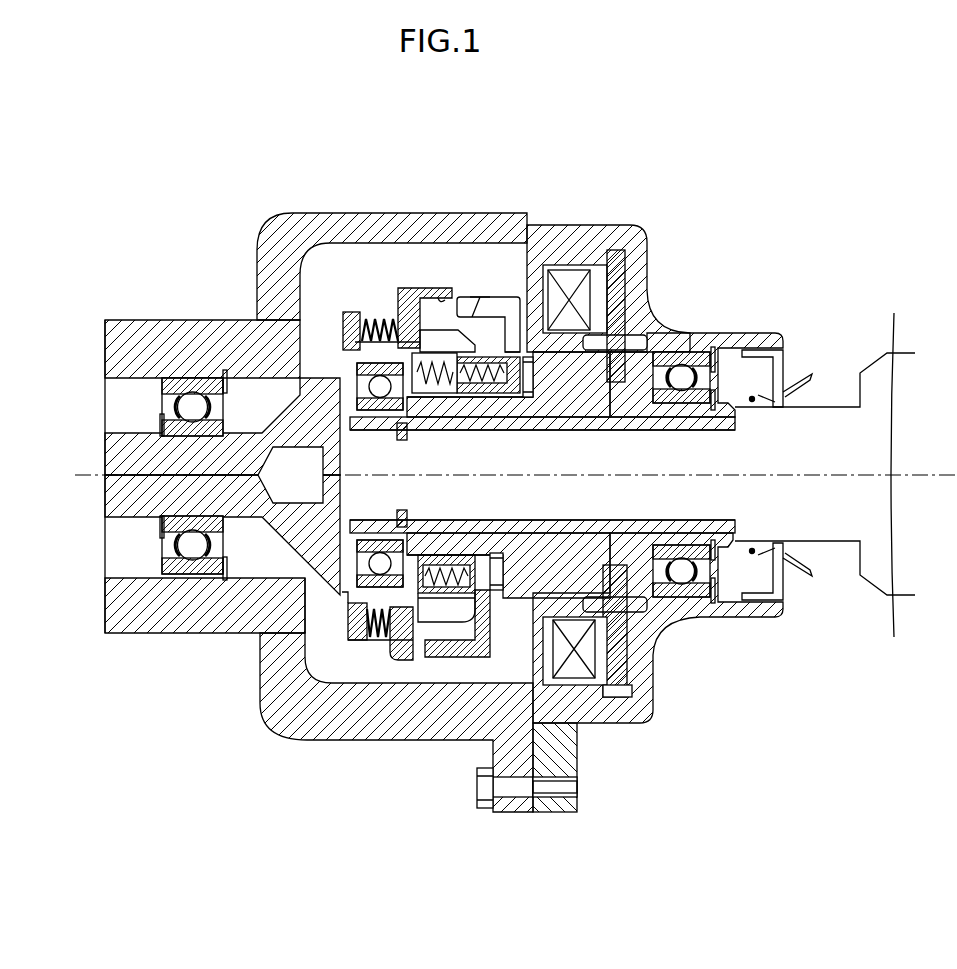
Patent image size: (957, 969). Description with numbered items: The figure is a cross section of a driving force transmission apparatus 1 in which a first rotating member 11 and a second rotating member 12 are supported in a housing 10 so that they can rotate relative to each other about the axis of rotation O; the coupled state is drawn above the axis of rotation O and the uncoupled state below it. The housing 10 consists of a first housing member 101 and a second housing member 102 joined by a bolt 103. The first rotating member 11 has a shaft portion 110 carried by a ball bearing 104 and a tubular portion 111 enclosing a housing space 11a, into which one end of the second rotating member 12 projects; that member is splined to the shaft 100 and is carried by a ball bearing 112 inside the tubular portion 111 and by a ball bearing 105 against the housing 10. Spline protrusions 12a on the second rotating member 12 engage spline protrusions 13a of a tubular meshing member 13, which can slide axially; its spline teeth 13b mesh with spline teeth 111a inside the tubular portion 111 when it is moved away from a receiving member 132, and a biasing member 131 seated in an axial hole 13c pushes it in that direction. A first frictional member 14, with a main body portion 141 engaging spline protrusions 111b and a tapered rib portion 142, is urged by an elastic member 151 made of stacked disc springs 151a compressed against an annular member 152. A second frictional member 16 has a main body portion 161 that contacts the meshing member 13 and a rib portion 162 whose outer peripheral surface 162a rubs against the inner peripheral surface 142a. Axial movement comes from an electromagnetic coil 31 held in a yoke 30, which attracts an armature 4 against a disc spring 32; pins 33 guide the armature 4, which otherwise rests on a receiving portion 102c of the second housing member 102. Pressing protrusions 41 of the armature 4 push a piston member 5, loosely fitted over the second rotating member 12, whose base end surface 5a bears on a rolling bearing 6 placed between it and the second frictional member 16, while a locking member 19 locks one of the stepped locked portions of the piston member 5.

The driving force transmission apparatus 1 is at (128, 205).
The housing 10 is at (535, 800).
The first housing member 101 is at (505, 808).
The second housing member 102 is at (555, 783).
The receiving portion 102c is at (635, 690).
The bolt 103 is at (480, 788).
The ball bearing 104 is at (170, 568).
The ball bearing 105 is at (700, 540).
The first rotating member 11 is at (137, 433).
The housing space 11a is at (340, 417).
The shaft portion 110 is at (257, 437).
The tubular portion 111 is at (362, 300).
The spline teeth 111a is at (463, 597).
The spline protrusions 111b is at (394, 318).
The ball bearing 112 is at (380, 411).
The second rotating member 12 is at (717, 547).
The spline protrusions 12a is at (440, 431).
The meshing member 13 is at (496, 413).
The spline protrusions 13a is at (452, 553).
The spline teeth 13b is at (435, 600).
The axial hole 13c is at (460, 570).
The biasing member 131 is at (447, 400).
The receiving member 132 is at (407, 400).
The first frictional member 14 is at (411, 224).
The main body portion 141 is at (415, 317).
The rib portion 142 is at (436, 296).
The inner peripheral surface 142a is at (441, 298).
The elastic member 151 is at (370, 650).
The disc spring 151a is at (390, 634).
The annular member 152 is at (343, 320).
The second frictional member 16 is at (527, 241).
The main body portion 161 is at (517, 317).
The rib portion 162 is at (503, 302).
The outer peripheral surface 162a is at (476, 298).
The locking member 19 is at (628, 387).
The yoke 30 is at (590, 268).
The electromagnetic coil 31 is at (580, 660).
The disc spring 32 is at (600, 272).
The pin 33 is at (623, 605).
The armature 4 is at (615, 287).
The pressing protrusion 41 is at (610, 360).
The piston member 5 is at (562, 385).
The base end surface 5a is at (513, 398).
The rolling bearing 6 is at (497, 568).
The shaft 100 is at (880, 408).
The axis of rotation O is at (917, 470).